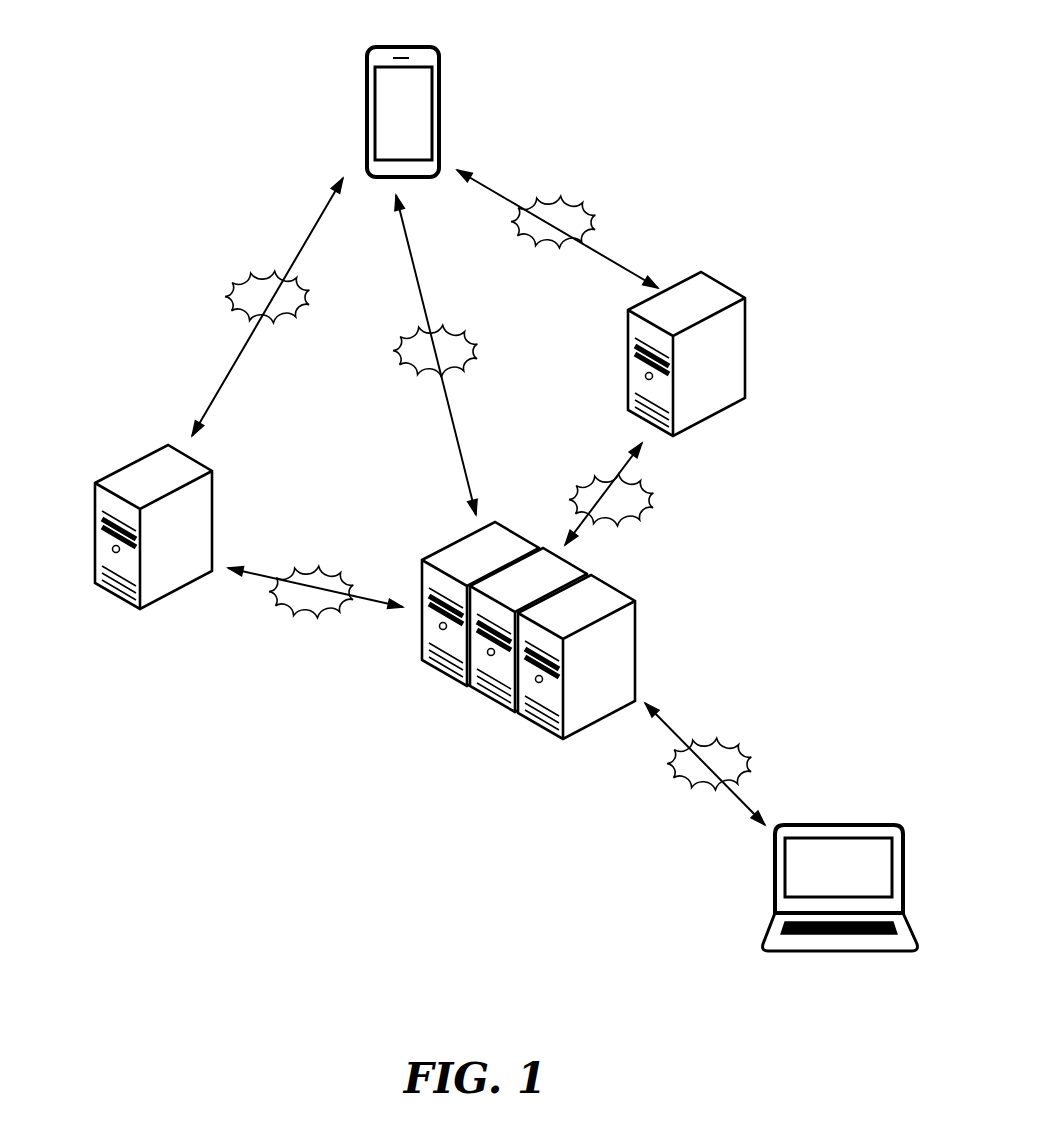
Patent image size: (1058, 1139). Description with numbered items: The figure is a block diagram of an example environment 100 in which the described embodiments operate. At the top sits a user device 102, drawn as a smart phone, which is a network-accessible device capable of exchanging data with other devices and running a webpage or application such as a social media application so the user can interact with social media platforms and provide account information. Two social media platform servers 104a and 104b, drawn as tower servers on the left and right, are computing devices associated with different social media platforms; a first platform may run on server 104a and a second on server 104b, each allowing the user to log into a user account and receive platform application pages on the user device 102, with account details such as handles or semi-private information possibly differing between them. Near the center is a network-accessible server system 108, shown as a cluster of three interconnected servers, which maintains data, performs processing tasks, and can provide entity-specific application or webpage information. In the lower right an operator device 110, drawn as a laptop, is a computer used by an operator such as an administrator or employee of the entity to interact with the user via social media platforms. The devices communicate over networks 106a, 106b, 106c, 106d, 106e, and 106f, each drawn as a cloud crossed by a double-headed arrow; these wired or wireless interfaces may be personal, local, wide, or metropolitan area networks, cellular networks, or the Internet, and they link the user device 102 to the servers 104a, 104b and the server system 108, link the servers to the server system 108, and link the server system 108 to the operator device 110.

The environment 100 is at (782, 92).
The user device 102 is at (396, 44).
The social media platform server 104a is at (95, 486).
The social media platform server 104b is at (728, 283).
The network 106a is at (226, 287).
The network 106b is at (575, 196).
The network 106c is at (340, 566).
The network 106d is at (655, 491).
The network 106e is at (735, 738).
The network 106f is at (452, 324).
The network-accessible server system 108 is at (636, 652).
The operator device 110 is at (883, 825).